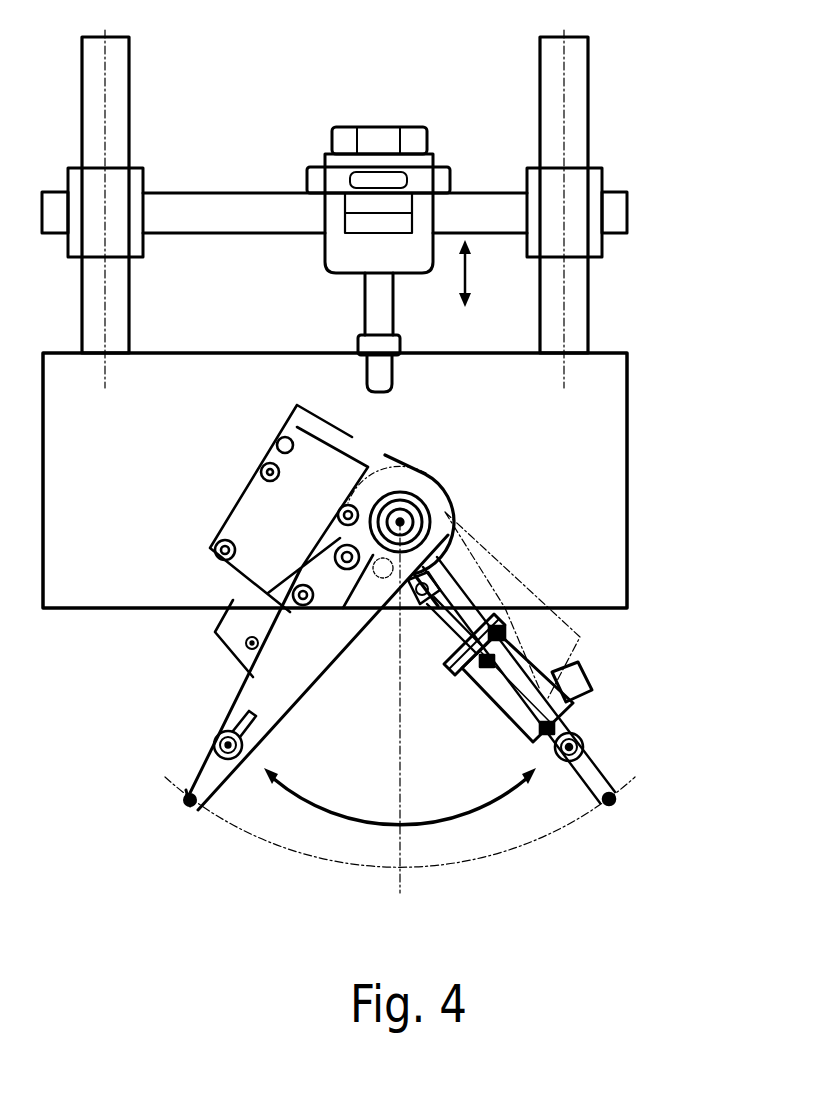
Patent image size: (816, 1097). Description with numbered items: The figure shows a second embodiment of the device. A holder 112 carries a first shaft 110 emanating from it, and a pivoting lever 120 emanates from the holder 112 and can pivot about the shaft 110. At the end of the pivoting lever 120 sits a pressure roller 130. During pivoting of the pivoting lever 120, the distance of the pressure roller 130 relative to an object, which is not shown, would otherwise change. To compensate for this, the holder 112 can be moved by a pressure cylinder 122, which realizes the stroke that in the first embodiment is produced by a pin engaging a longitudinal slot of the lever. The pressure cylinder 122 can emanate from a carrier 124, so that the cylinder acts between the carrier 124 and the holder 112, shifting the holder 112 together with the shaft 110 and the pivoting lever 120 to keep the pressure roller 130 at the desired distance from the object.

The shaft 110 is at (408, 513).
The holder 112 is at (596, 543).
The pivoting lever 120 is at (232, 696).
The pressure cylinder 122 is at (408, 123).
The carrier 124 is at (570, 167).
The pressure roller 130 is at (172, 794).